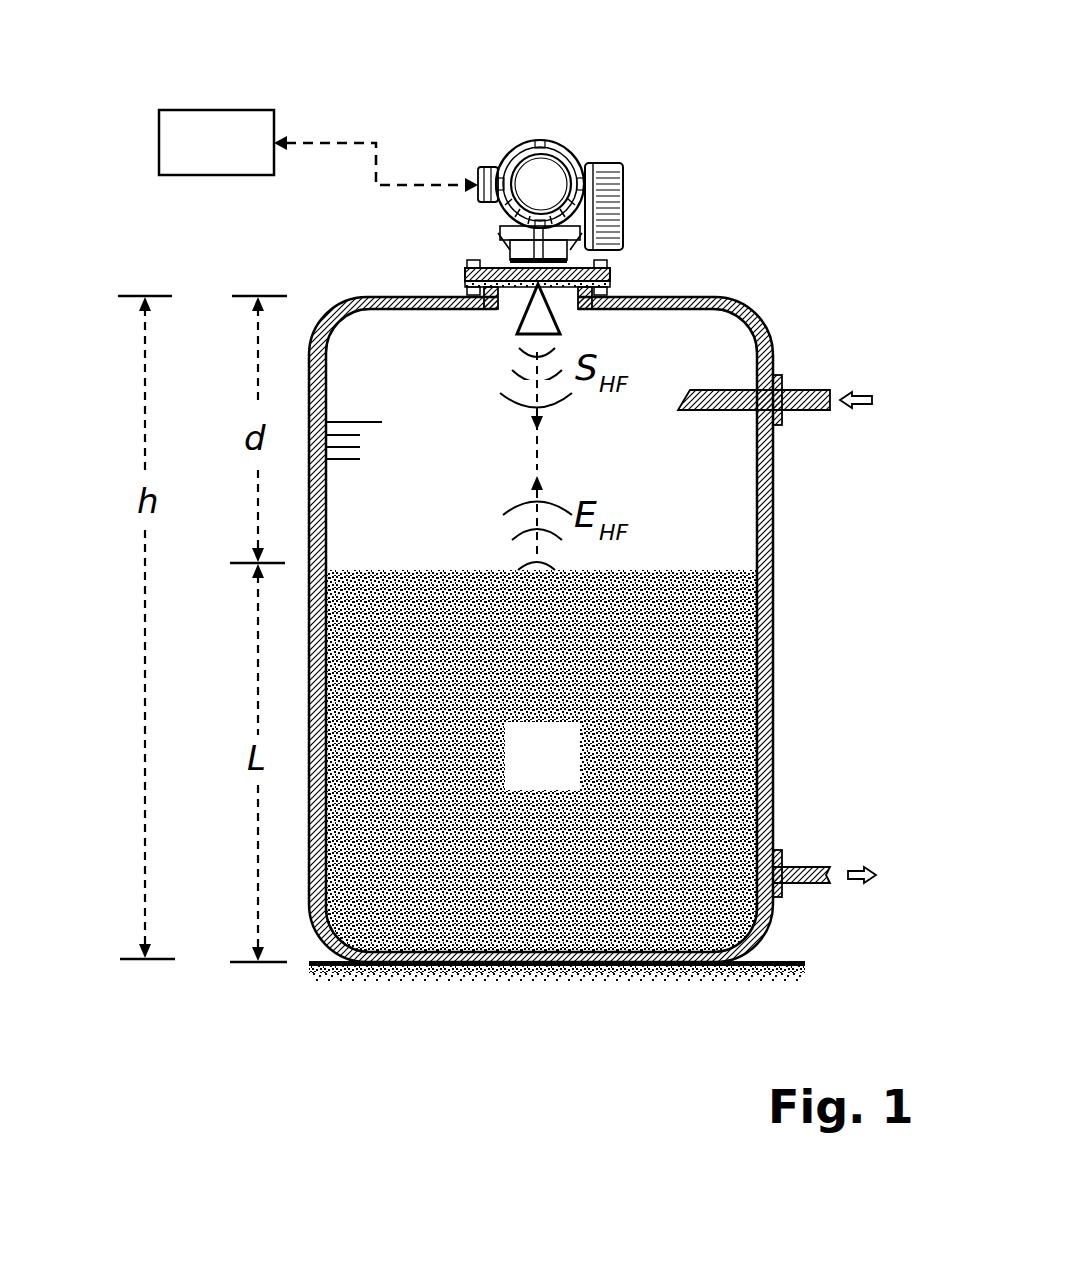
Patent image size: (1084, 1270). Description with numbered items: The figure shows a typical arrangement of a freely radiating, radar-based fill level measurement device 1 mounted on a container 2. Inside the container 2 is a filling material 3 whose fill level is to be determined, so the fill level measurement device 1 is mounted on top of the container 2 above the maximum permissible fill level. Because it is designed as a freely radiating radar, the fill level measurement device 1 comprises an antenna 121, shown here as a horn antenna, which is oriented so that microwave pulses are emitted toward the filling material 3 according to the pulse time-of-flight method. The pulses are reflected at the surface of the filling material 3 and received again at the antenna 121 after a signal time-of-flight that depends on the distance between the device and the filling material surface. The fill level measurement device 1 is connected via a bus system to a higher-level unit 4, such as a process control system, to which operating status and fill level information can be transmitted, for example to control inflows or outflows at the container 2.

The fill level measurement device 1 is at (428, 108).
The container 2 is at (773, 693).
The filling material 3 is at (556, 781).
The higher-level unit 4 is at (226, 163).
The antenna 121 is at (527, 312).